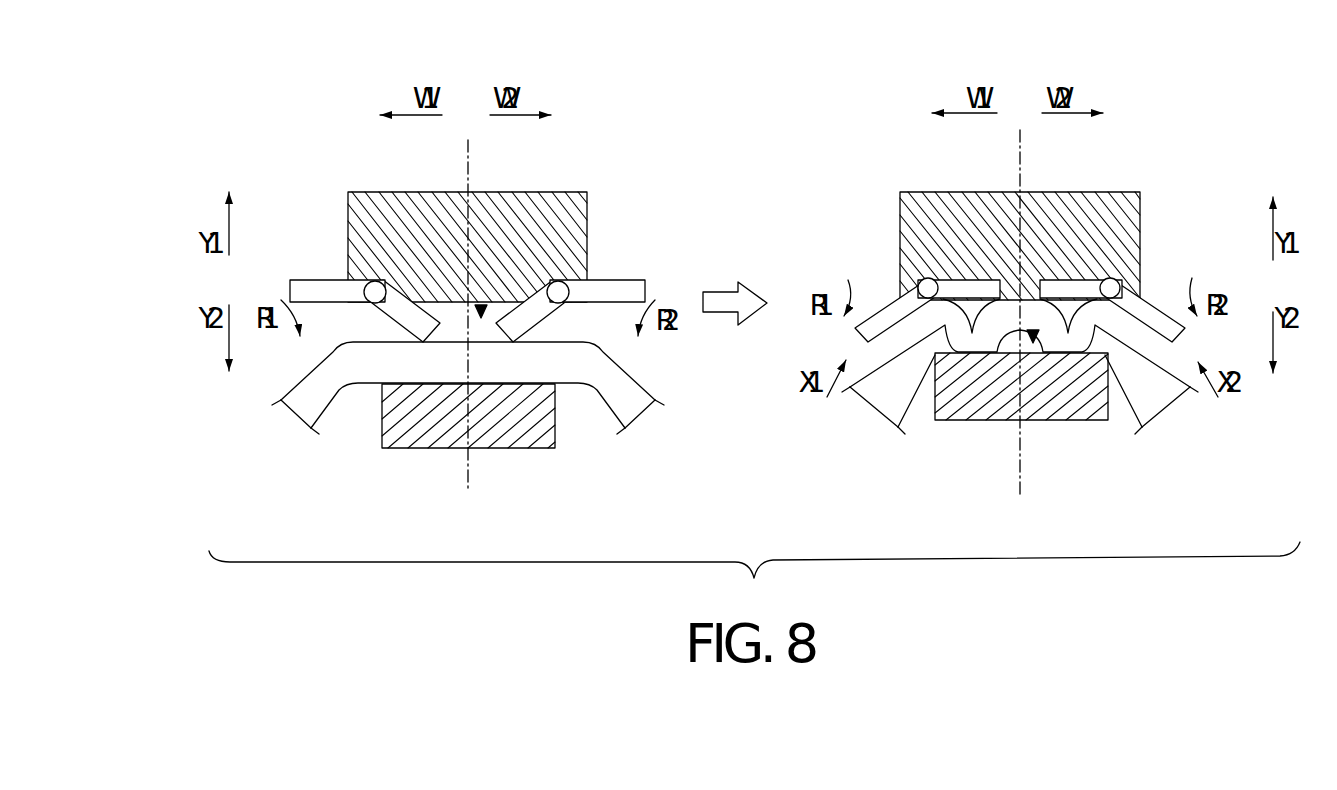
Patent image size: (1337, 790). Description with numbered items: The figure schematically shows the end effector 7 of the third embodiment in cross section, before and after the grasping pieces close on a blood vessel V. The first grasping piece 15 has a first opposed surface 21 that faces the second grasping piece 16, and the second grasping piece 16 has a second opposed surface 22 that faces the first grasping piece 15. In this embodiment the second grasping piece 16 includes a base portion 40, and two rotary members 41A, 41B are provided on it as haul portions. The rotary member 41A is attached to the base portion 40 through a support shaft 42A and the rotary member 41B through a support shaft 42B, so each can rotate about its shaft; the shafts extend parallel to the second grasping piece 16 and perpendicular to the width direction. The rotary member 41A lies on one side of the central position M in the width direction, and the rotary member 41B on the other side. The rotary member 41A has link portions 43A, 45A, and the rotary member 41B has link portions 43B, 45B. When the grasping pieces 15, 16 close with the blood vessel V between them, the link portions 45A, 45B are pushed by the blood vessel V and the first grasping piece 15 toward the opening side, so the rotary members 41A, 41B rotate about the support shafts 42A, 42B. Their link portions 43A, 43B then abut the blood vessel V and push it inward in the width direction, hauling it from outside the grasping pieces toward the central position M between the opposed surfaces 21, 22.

The end effector 7 is at (638, 164).
The first grasping piece 15 is at (543, 453).
The second grasping piece 16 is at (607, 219).
The first opposed surface 21 is at (522, 376).
The second opposed surface 22 is at (504, 300).
The base portion 40 is at (364, 197).
The rotary member 41A is at (348, 284).
The rotary member 41B is at (596, 283).
The support shaft 42A is at (371, 283).
The support shaft 42B is at (560, 283).
The link portion 43A is at (316, 281).
The link portion 43B is at (640, 281).
The link portion 45A is at (401, 320).
The link portion 45B is at (535, 320).
The central position M is at (463, 152).
The blood vessel V is at (629, 386).